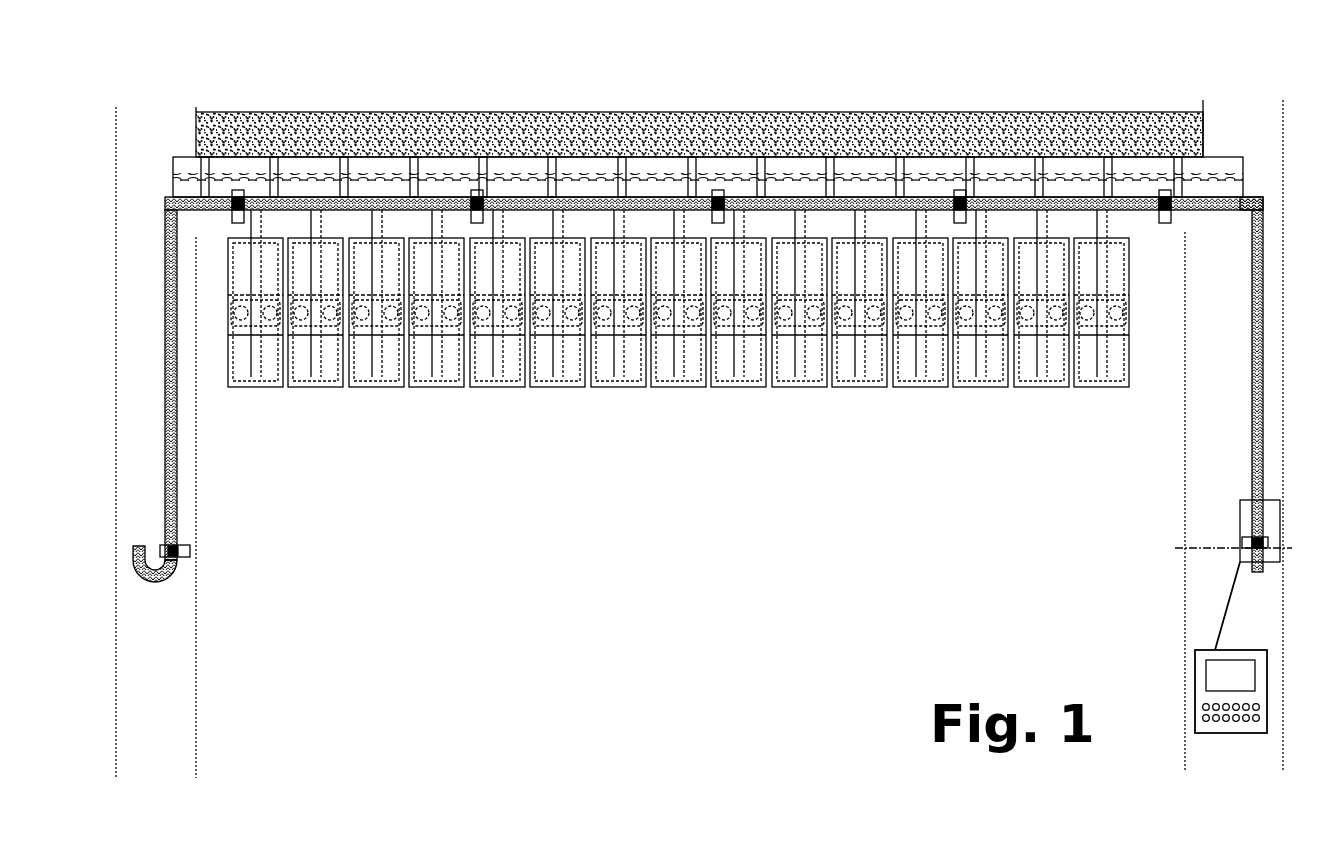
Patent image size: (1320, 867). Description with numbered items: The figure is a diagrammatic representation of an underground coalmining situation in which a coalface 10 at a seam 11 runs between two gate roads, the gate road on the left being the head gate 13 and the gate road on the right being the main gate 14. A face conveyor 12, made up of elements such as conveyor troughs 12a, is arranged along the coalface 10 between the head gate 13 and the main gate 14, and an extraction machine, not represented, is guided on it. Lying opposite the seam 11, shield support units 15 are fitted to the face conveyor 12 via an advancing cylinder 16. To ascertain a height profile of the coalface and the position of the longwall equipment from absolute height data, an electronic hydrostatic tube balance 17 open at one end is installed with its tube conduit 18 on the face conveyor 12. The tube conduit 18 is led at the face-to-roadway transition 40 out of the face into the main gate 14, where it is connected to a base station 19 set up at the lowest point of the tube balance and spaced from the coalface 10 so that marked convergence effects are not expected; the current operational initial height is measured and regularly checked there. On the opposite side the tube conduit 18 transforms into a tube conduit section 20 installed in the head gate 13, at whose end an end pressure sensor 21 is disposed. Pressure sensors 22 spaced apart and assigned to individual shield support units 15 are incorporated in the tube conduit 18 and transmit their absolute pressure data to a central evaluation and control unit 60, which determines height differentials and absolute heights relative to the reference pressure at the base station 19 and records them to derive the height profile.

The coalface 10 is at (831, 86).
The seam 11 is at (711, 112).
The face conveyor 12 is at (877, 112).
The conveyor troughs 12a is at (848, 168).
The head gate 13 is at (185, 398).
The main gate 14 is at (1243, 420).
The shield support units 15 is at (686, 388).
The advancing cylinder 16 is at (558, 222).
The electronic hydrostatic tube balance 17 is at (1248, 306).
The tube conduit 18 is at (1220, 197).
The base station 19 is at (1240, 500).
The tube conduit section 20 is at (177, 475).
The end pressure sensor 21 is at (190, 548).
The pressure sensors 22 is at (1167, 224).
The face-to-roadway transition 40 is at (1178, 232).
The central evaluation and control unit 60 is at (1195, 650).